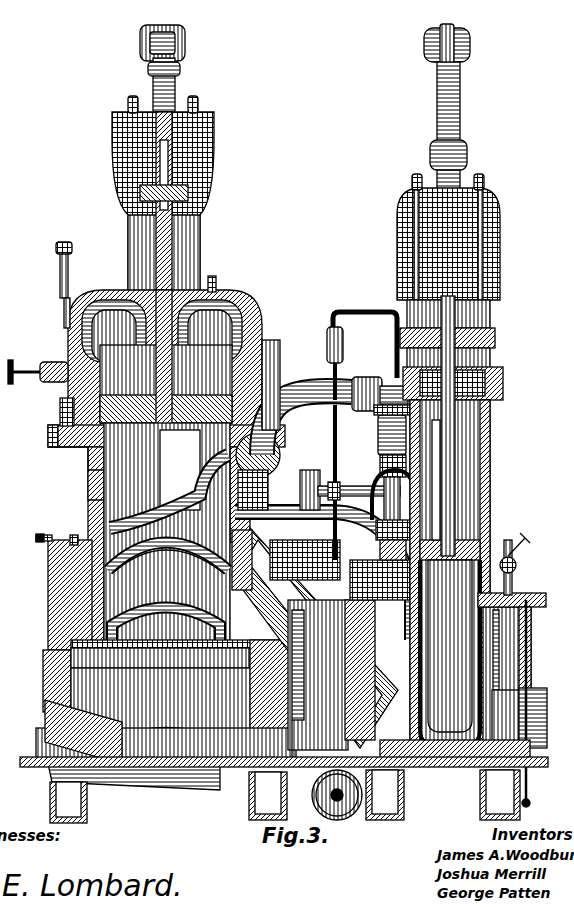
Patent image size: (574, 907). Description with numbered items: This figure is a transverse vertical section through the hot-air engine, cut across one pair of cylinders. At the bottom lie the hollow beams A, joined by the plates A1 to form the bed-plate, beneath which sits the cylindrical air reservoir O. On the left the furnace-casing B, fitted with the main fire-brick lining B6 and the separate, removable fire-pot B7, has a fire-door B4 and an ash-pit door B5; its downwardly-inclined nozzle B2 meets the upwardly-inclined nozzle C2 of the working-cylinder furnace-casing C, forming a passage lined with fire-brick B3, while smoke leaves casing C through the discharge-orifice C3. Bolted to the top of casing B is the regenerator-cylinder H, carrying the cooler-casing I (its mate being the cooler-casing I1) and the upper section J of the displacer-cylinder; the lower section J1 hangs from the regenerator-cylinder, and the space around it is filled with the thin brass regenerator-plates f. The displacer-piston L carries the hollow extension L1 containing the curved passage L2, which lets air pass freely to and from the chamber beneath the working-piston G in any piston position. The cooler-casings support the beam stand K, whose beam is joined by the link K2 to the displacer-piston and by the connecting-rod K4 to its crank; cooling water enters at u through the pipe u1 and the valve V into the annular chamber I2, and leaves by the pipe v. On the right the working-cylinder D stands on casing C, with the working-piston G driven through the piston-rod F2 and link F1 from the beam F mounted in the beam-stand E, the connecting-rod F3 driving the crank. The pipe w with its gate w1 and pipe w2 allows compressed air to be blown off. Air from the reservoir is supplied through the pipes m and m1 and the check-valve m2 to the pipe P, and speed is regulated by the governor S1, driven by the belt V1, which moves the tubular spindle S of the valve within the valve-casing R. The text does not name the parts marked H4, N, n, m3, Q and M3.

The connecting-rod K4 is at (160, 26).
The beam stand K is at (164, 85).
The link or connecting-rod K2 is at (214, 179).
The cooler-casing I is at (167, 365).
The upper section of displacer-cylinder J is at (48, 436).
The displacer-piston L is at (174, 357).
The regenerator-cylinder H is at (88, 490).
The hollow extension L1 is at (167, 534).
The curved passage L2 is at (169, 491).
The lower section of displacer-cylinder J1 is at (224, 592).
The lower dome H4 is at (166, 627).
The furnace-casing B is at (48, 594).
The fire-door B4 is at (45, 681).
The fire-brick lining B6 is at (181, 654).
The inner lining or fire-pot B7 is at (181, 687).
The ash-pit door B5 is at (157, 745).
The pipe P is at (322, 423).
The fire-brick lining B3 is at (322, 630).
The belt V1 is at (300, 482).
The downwardly-inclined tube or nozzle B2 is at (286, 560).
The column N is at (349, 655).
The rod n is at (303, 700).
The pipe m1 is at (365, 337).
The check-valve m2 is at (345, 345).
The pipe m is at (345, 461).
The pipe fitting m3 is at (359, 483).
The valve-casing R is at (378, 440).
The valve Q is at (383, 464).
The tubular spindle S is at (393, 518).
The governor S1 is at (389, 499).
The connecting-rod F3 is at (447, 37).
The beam F is at (450, 178).
The beam-stand E is at (455, 237).
The link or connecting-rod F1 is at (470, 302).
The working-cylinder D is at (457, 572).
The piston-rod F2 is at (455, 465).
The working-piston G is at (450, 652).
The working-cylinder furnace-casing C is at (512, 670).
The upwardly-inclined tube or nozzle C2 is at (505, 718).
The discharge-orifice C3 is at (547, 718).
The pipe w is at (502, 567).
The valve or gate w1 is at (513, 544).
The pipe w2 is at (531, 686).
The plate A1 is at (436, 768).
The hollow beam A is at (285, 796).
The cylindrical tank or reservoir O is at (337, 795).
The water-pump connection u is at (64, 263).
The pipe u1 is at (73, 304).
The pipe v is at (216, 281).
The valve V is at (38, 365).
The annular chamber I2 is at (59, 412).
The cooler-casing I1 is at (275, 411).
The side passage M3 is at (280, 385).
The regenerator-plate f is at (40, 530).